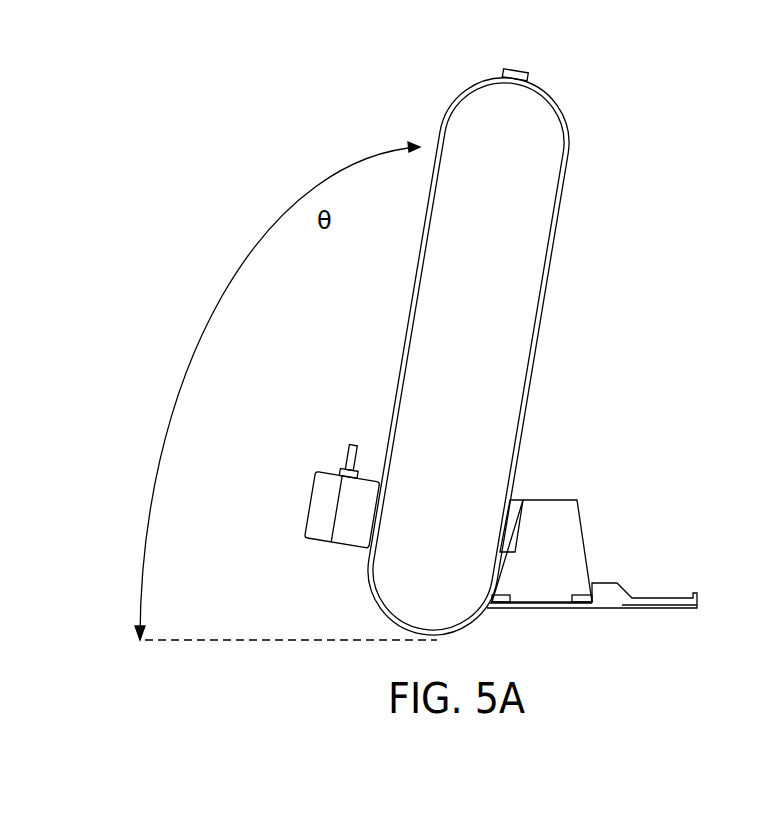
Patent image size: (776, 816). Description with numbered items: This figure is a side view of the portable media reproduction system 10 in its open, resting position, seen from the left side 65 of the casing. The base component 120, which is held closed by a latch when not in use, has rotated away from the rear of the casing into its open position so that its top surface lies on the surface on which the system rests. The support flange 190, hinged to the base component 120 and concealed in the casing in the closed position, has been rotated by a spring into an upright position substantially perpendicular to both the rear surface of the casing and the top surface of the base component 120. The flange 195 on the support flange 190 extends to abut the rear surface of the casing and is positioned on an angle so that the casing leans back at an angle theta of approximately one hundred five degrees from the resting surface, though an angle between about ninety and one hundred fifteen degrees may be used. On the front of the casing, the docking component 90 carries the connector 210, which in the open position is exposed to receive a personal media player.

The portable media reproduction system 10 is at (430, 96).
The left side 65 is at (548, 135).
The docking component 90 is at (317, 510).
The connector 210 is at (348, 448).
The flange 195 is at (513, 510).
The support flange 190 is at (567, 543).
The base component 120 is at (632, 603).